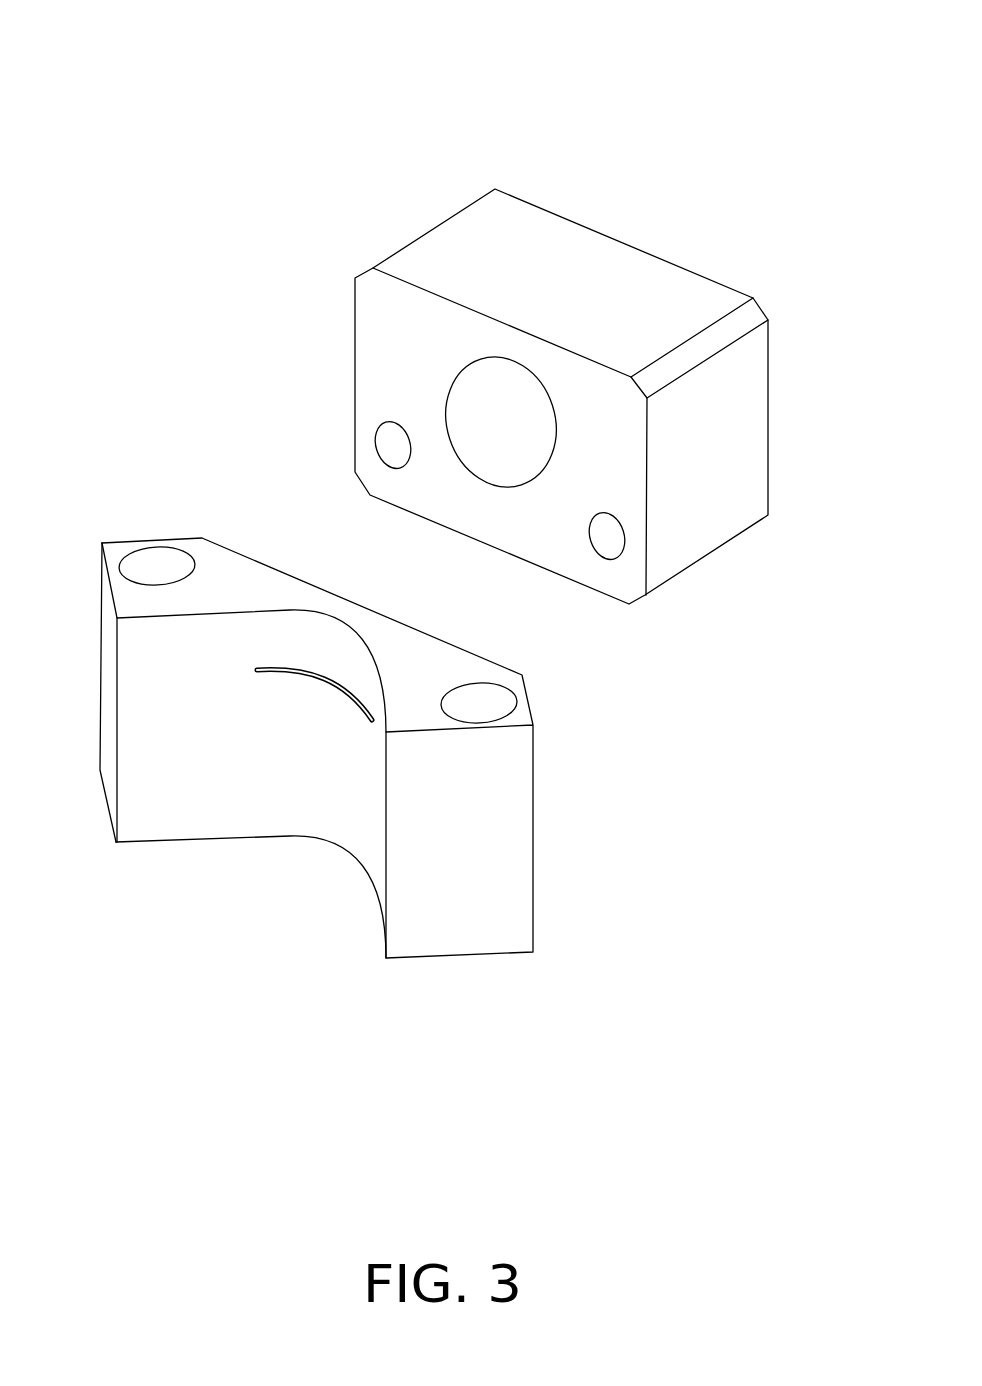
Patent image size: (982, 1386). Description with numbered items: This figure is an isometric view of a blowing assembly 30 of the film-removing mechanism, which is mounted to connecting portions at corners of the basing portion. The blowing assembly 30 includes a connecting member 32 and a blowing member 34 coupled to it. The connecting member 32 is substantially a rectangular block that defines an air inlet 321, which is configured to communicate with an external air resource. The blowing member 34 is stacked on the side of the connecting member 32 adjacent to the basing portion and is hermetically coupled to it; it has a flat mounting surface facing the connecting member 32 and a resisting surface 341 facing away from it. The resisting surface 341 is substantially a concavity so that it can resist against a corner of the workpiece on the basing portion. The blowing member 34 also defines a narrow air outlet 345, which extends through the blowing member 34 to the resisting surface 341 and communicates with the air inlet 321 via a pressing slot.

The blowing assembly 30 is at (455, 46).
The connecting member 32 is at (442, 257).
The air inlet 321 is at (482, 407).
The blowing member 34 is at (556, 837).
The resisting surface 341 is at (177, 825).
The air outlet 345 is at (293, 668).